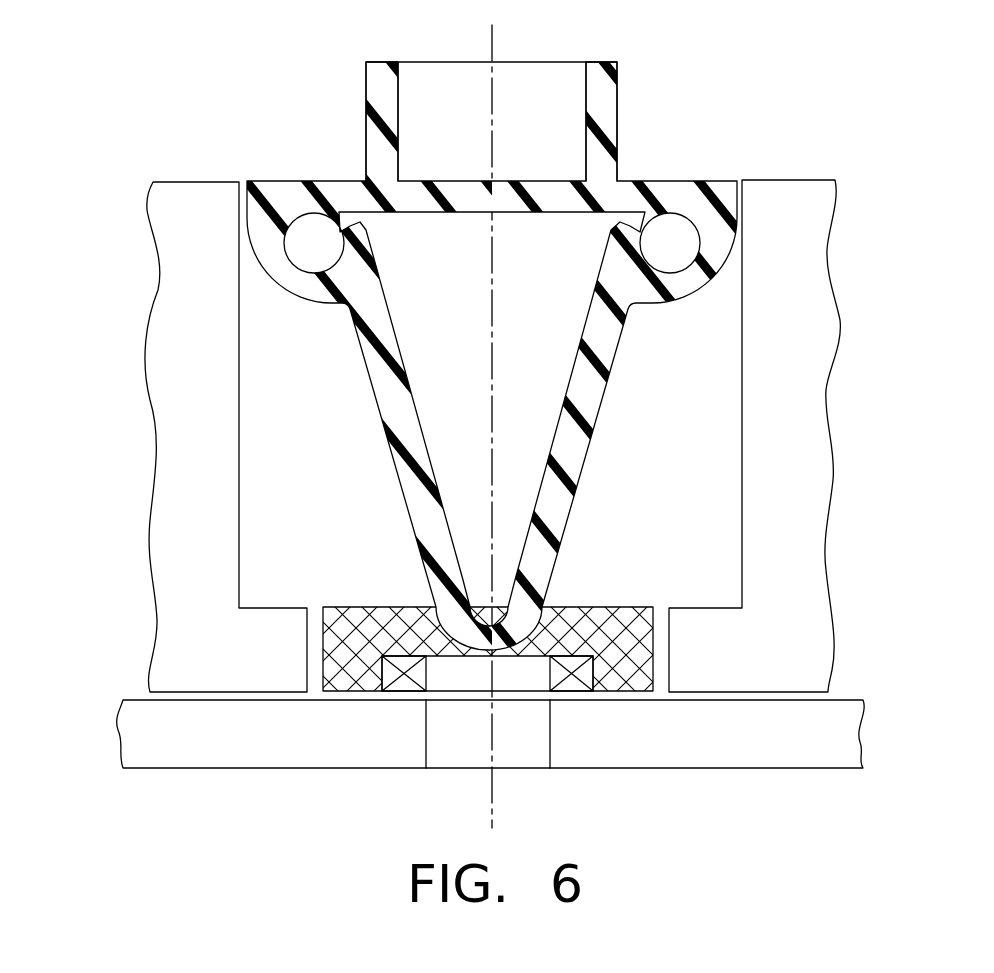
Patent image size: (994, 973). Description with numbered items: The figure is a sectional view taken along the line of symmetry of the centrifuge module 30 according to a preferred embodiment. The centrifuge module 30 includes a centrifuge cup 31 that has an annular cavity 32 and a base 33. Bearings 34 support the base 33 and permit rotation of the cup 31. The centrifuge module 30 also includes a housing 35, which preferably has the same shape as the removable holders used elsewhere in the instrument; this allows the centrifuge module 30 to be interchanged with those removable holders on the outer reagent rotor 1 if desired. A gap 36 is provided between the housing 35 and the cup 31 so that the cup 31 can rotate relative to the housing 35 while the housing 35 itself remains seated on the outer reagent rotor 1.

The outer reagent rotor 1 is at (815, 755).
The centrifuge module 30 is at (140, 283).
The centrifuge cup 31 is at (618, 123).
The annular cavity 32 is at (674, 238).
The base 33 is at (628, 683).
The bearings 34 is at (403, 683).
The housing 35 is at (815, 297).
The gap 36 is at (243, 182).